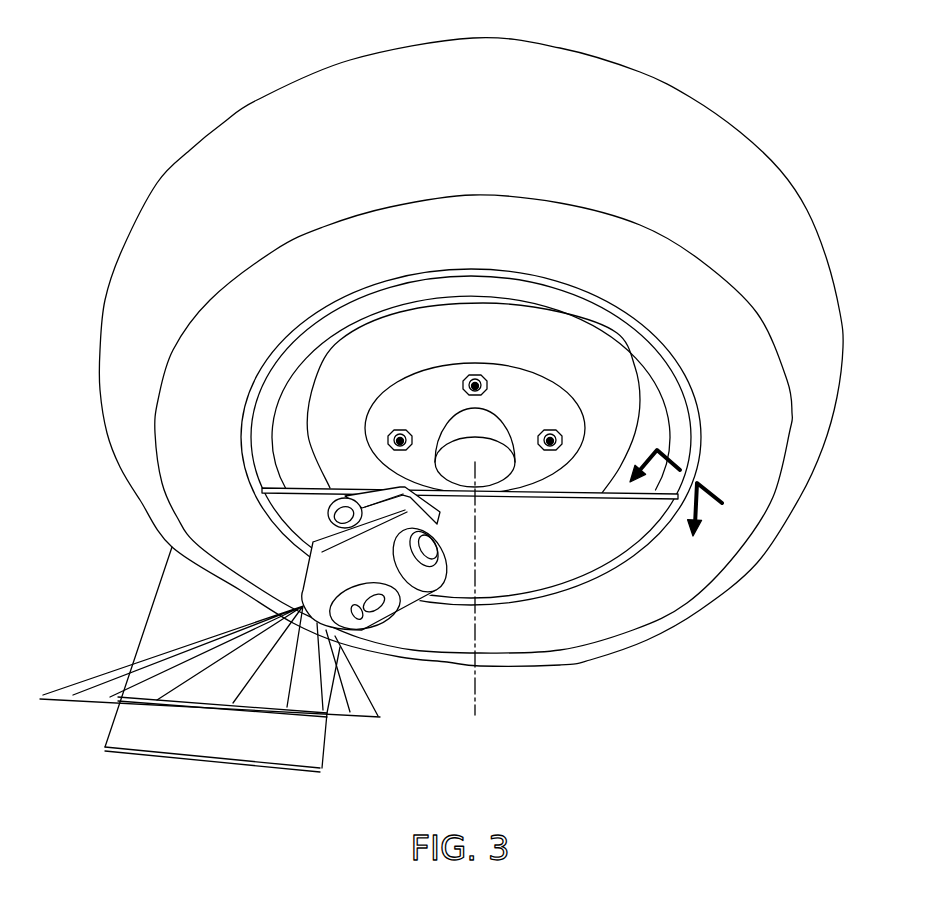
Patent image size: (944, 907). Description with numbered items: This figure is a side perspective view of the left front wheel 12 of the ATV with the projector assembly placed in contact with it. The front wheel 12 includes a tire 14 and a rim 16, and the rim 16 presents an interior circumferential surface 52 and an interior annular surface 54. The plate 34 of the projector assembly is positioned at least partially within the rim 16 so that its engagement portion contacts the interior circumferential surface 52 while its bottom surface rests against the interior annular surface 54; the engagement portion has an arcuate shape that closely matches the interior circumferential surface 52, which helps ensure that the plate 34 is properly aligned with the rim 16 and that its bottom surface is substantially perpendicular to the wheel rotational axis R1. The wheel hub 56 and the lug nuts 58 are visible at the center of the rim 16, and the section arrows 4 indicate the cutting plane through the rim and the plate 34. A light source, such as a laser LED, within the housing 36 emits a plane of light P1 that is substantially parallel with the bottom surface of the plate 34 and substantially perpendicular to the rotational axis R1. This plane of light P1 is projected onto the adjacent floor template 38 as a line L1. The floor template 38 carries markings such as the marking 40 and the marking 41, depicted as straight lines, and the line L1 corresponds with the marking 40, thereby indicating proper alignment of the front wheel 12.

The front wheel 12 is at (463, 358).
The tire 14 is at (471, 346).
The rim 16 is at (459, 487).
The plate 34 is at (471, 451).
The housing 36 is at (380, 595).
The floor template 38 is at (210, 699).
The marking 40 is at (183, 710).
The marking 41 is at (207, 702).
The interior circumferential surface 52 is at (250, 445).
The interior annular surface 54 is at (277, 388).
The wheel hub 56 is at (500, 428).
The lug nuts 58 is at (473, 370).
The section line 4- 4 is at (660, 508).
The plane of light P1 is at (227, 657).
The line L1 is at (90, 703).
The rotational axis R1 is at (480, 708).